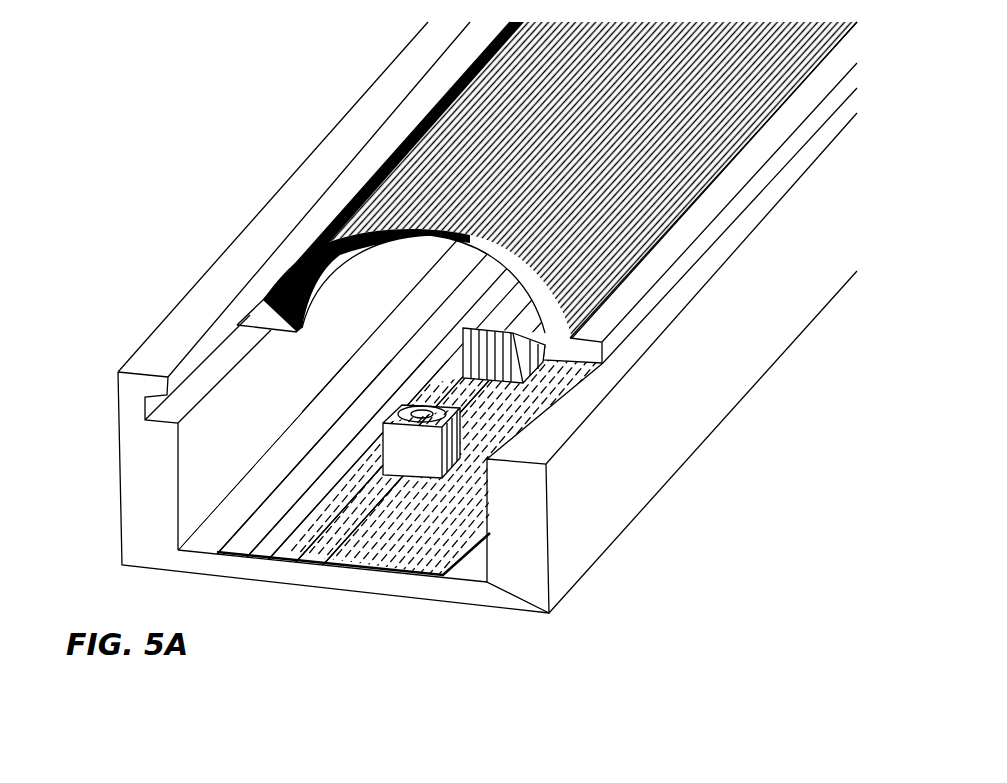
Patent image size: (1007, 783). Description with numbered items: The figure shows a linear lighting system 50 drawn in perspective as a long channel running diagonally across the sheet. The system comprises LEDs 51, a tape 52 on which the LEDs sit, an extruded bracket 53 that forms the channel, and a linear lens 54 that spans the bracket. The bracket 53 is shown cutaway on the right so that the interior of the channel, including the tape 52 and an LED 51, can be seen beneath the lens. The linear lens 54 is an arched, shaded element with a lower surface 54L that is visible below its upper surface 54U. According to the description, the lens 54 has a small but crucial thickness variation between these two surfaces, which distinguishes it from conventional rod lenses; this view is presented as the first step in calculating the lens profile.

The linear lighting system 50 is at (487, 320).
The LEDs 51 is at (421, 441).
The tape 52 is at (476, 389).
The extruded bracket 53 is at (745, 615).
The linear lens 54 is at (517, 283).
The upper surface 54U is at (560, 191).
The lower surface 54L is at (345, 306).